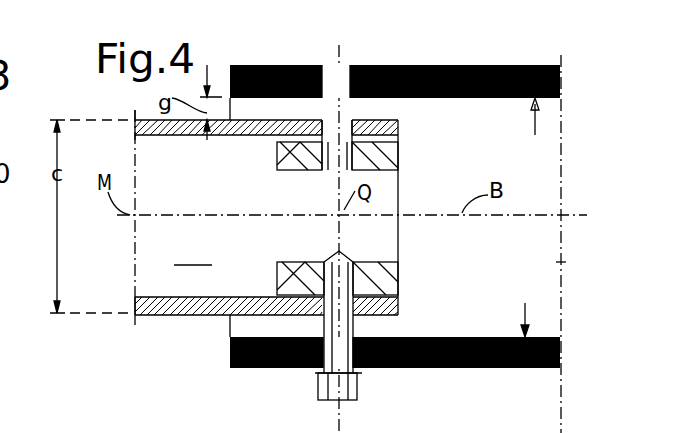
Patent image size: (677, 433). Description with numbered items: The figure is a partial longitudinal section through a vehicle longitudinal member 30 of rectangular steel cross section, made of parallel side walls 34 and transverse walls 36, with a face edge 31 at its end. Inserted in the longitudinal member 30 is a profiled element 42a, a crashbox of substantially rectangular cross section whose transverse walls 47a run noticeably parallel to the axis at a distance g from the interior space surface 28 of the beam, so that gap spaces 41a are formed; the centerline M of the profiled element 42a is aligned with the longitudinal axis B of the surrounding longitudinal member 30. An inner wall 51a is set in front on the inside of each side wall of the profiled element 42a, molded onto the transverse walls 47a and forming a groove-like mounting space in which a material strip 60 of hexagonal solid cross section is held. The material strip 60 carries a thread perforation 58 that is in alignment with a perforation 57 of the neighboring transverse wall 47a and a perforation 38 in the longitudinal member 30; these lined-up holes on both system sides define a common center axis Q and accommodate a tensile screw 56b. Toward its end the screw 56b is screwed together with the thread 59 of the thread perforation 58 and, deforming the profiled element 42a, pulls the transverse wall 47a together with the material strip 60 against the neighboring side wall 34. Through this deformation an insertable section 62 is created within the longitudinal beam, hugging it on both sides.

The interior space surface 28 is at (546, 253).
The vehicle longitudinal member 30 is at (572, 152).
The face edge 31 is at (230, 355).
The side wall 34 is at (547, 265).
The transverse wall 36 is at (561, 83).
The perforation 38 is at (345, 78).
The gap space 41a is at (224, 394).
The profiled element 42a is at (166, 317).
The transverse wall 47a is at (432, 310).
The inner wall 51a is at (195, 252).
The tensile screw 56b is at (357, 388).
The perforation 57 is at (344, 128).
The thread perforation 58 is at (335, 158).
The thread 59 is at (292, 157).
The material strip 60 is at (385, 152).
The insertable section 62 is at (423, 432).